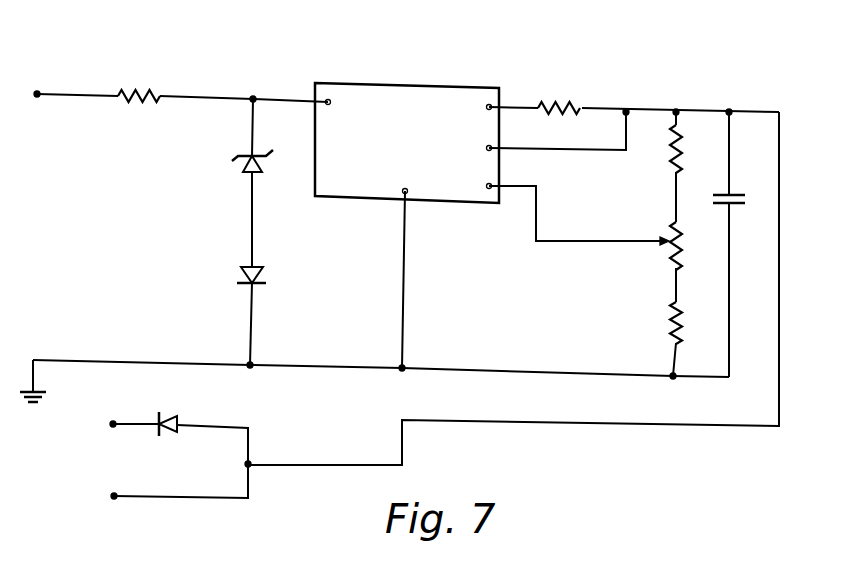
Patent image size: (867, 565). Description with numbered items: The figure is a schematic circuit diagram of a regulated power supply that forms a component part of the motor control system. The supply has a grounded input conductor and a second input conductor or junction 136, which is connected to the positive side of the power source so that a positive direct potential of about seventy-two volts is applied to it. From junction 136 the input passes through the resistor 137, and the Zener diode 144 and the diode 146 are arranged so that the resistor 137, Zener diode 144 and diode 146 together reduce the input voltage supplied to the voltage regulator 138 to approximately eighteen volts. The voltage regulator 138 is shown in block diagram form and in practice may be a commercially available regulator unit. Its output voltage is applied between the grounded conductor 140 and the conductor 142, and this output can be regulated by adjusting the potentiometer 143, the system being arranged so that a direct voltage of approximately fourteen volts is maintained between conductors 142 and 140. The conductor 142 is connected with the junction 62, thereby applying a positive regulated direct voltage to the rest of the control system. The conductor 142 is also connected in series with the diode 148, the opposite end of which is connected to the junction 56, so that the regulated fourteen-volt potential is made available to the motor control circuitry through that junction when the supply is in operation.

The junction 56 is at (113, 424).
The junction 62 is at (114, 496).
The input junction 136 is at (37, 94).
The resistor 137 is at (155, 93).
The voltage regulator 138 is at (405, 90).
The grounded conductor 140 is at (455, 369).
The conductor 142 is at (652, 112).
The potentiometer 143 is at (655, 244).
The Zener diode 144 is at (246, 163).
The diode 146 is at (262, 270).
The diode 148 is at (180, 421).